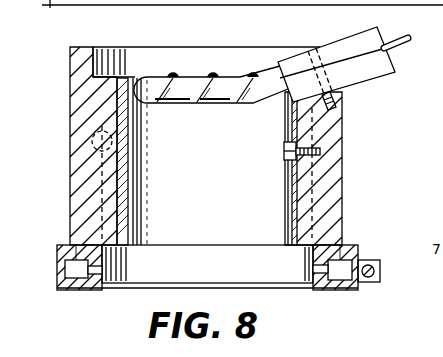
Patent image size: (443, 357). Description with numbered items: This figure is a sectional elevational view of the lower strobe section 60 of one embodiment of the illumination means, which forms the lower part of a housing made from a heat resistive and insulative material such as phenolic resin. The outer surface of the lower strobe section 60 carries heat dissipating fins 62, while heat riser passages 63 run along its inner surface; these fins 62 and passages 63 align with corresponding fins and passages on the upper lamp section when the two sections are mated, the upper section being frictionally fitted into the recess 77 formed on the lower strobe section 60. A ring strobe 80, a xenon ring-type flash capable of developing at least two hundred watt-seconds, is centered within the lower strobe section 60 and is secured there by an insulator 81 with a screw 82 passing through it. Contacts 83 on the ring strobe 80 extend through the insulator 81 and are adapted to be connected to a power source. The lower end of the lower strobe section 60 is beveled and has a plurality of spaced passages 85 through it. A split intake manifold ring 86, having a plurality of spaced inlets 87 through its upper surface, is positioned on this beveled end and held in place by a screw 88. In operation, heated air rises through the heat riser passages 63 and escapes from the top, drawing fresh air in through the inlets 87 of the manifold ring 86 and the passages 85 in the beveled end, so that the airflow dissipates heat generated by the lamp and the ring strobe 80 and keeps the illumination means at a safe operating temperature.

The lower strobe section 60 is at (225, 146).
The heat dissipating fins 62 is at (70, 108).
The heat riser passages 63 is at (92, 148).
The recess 77 is at (96, 64).
The ring strobe 80 is at (207, 107).
The insulator 81 is at (365, 85).
The screw 82 is at (310, 53).
The contacts 83 is at (401, 50).
The spaced passages 85 is at (103, 267).
The split intake manifold ring 86 is at (337, 290).
The spaced inlets 87 is at (74, 243).
The screw 88 is at (375, 273).